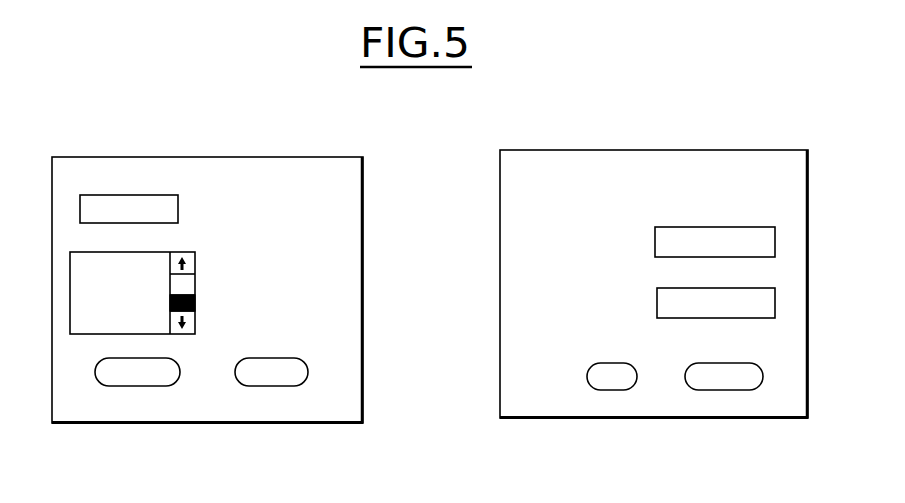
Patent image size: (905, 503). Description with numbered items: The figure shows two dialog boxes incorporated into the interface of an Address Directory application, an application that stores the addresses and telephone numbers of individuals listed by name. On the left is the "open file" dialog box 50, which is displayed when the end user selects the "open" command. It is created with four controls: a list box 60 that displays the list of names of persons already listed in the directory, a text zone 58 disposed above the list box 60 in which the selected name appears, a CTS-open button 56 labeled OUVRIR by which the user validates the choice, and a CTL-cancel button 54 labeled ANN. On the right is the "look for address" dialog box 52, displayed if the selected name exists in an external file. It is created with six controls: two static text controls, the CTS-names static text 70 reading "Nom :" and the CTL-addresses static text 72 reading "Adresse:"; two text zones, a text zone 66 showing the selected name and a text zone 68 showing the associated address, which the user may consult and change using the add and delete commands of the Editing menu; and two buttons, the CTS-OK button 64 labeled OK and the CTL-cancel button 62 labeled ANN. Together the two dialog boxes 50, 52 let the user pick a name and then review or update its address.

The open file dialog box 50 is at (224, 150).
The look for address dialog box 52 is at (664, 146).
The CTL-cancel button 54 is at (257, 386).
The CTS-open button 56 is at (132, 386).
The text zone 58 is at (116, 195).
The list box 60 is at (70, 298).
The CTL-cancel button 62 is at (717, 390).
The CTS-OK button 64 is at (605, 390).
The text zone 66 is at (733, 227).
The text zone 68 is at (775, 305).
The CTS-names static text 70 is at (536, 249).
The CTL-addresses static text 72 is at (541, 307).